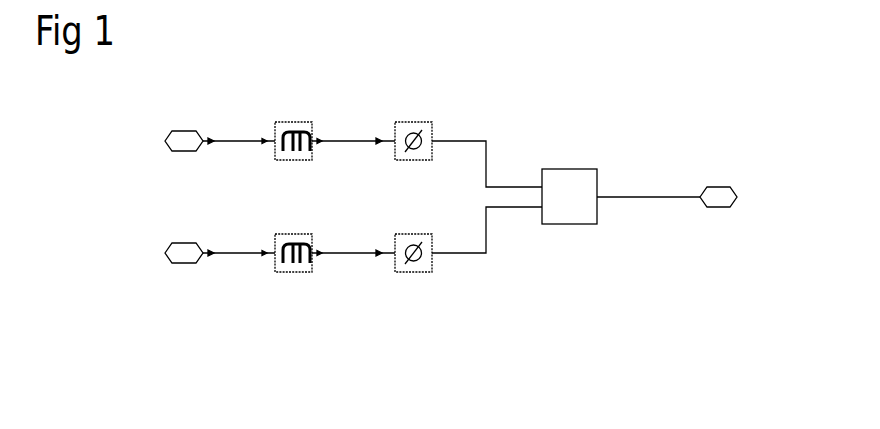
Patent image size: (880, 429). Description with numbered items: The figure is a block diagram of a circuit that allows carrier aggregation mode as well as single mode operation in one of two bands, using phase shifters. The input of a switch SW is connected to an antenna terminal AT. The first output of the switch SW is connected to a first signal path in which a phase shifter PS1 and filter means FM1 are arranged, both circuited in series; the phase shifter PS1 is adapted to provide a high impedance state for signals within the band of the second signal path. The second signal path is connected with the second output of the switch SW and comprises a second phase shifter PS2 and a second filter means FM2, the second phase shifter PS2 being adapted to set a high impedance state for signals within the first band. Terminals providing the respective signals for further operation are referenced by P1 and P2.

The terminal P1 is at (187, 248).
The terminal P2 is at (178, 137).
The filter means FM1 is at (288, 272).
The second filter means FM2 is at (298, 123).
The phase shifter PS1 is at (412, 272).
The second phase shifter PS2 is at (430, 122).
The switch SW is at (572, 213).
The antenna terminal AT is at (713, 198).